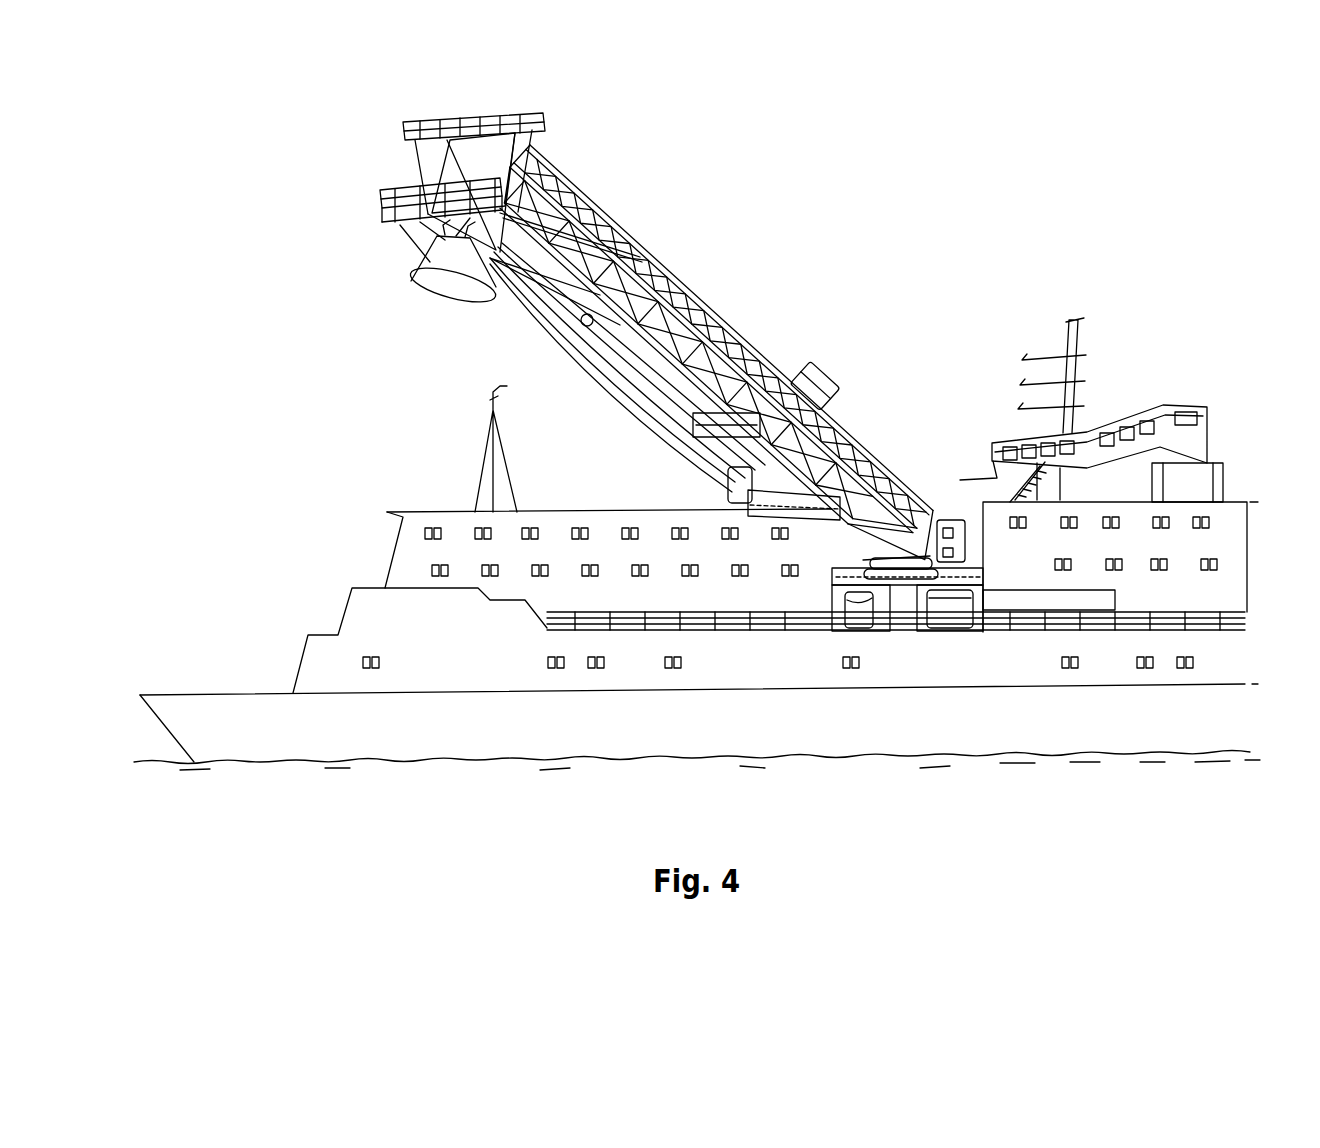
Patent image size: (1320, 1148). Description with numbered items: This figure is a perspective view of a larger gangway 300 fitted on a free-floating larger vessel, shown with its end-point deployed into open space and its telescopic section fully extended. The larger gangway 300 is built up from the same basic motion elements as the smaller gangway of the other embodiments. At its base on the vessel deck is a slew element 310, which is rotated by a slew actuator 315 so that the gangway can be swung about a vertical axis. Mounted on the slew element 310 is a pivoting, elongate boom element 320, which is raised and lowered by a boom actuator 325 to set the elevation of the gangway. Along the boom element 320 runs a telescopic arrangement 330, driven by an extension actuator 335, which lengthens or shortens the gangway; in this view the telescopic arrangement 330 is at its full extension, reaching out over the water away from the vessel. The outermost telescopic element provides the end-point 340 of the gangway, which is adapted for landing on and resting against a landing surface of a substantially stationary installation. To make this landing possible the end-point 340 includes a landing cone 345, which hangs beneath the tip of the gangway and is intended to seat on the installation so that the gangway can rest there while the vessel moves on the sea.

The larger gangway 300 is at (872, 286).
The slew element 310 is at (948, 600).
The slew actuator 315 is at (946, 566).
The boom element 320 is at (812, 372).
The boom actuator 325 is at (933, 497).
The telescopic arrangement 330 is at (656, 262).
The extension actuator 335 is at (740, 445).
The end-point 340 is at (381, 200).
The landing cone 345 is at (443, 282).